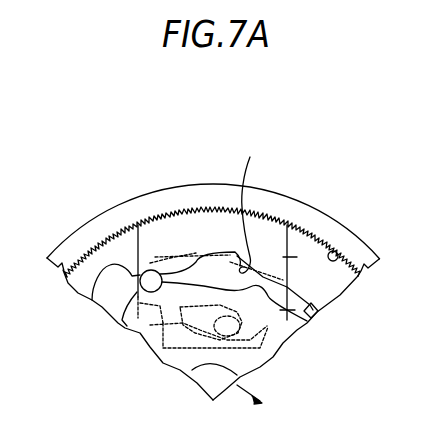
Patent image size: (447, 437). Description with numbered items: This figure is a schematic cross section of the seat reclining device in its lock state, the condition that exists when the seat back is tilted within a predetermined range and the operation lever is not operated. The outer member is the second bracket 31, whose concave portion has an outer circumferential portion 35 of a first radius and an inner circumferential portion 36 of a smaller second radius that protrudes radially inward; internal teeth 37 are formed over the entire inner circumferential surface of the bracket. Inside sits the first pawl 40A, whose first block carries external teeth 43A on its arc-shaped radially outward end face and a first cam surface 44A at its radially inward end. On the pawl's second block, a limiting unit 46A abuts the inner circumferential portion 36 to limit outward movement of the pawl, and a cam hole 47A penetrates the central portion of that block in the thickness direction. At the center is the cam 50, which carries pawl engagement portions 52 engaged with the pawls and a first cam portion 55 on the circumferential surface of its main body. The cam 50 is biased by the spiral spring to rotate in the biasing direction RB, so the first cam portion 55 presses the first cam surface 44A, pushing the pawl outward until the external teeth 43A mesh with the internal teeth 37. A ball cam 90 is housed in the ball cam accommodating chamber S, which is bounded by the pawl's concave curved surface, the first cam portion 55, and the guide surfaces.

The second bracket 31 is at (58, 256).
The outer circumferential portion 35 is at (155, 257).
The inner circumferential portion 36 is at (318, 315).
The internal teeth 37 is at (343, 249).
The first pawl 40A is at (288, 257).
The external teeth 43A is at (272, 212).
The first cam surface 44A is at (258, 205).
The limiting unit 46A is at (215, 257).
The cam hole 47A is at (163, 330).
The cam 50 is at (178, 361).
The pawl engagement portion 52 is at (275, 358).
The first cam portion 55 is at (307, 330).
The ball cam 90 is at (102, 307).
The ball cam accommodating chamber S is at (123, 330).
The biasing direction RB is at (264, 400).